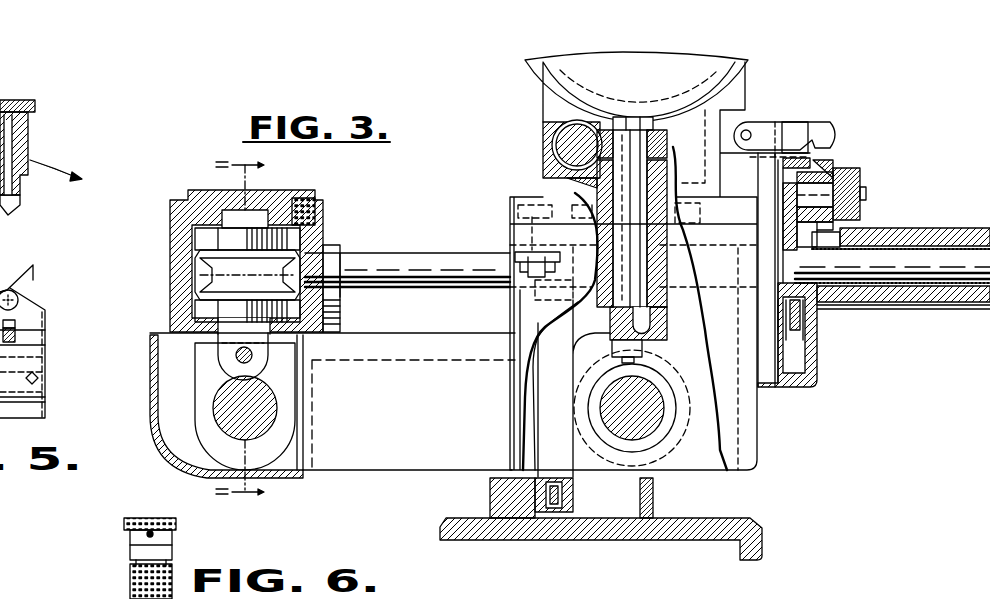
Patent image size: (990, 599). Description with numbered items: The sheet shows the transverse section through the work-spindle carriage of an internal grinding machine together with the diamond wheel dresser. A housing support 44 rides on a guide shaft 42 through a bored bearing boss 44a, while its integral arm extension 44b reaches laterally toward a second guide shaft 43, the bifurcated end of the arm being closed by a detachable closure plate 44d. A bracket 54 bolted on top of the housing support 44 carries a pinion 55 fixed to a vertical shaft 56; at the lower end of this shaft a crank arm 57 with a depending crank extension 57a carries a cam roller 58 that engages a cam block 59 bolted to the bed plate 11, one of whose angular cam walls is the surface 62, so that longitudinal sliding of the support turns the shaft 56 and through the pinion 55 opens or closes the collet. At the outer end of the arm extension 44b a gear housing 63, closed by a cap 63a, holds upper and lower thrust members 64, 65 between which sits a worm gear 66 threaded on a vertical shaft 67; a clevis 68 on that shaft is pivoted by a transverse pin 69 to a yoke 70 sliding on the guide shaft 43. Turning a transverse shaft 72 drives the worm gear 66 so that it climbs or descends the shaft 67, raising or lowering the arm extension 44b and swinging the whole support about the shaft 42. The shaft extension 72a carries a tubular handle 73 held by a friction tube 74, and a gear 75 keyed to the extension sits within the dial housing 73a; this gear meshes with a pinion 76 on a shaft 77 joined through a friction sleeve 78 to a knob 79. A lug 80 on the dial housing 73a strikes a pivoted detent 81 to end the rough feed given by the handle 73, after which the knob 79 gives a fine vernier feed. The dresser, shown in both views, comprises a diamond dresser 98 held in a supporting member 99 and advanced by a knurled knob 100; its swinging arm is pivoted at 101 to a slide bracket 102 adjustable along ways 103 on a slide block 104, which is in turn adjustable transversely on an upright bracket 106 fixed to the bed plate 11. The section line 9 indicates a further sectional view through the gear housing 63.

In FIG. 3, the section line 9 is at (249, 331).
In FIG. 3, the bed plate 11 is at (740, 516).
In FIG. 3, the guide shaft 42 is at (668, 442).
In FIG. 3, the guide shaft 43 is at (280, 418).
In FIG. 3, the housing support 44 is at (760, 420).
In FIG. 3, the bearing boss 44a is at (668, 392).
In FIG. 3, the arm extension 44b is at (372, 462).
In FIG. 3, the closure plate 44d is at (156, 380).
In FIG. 3, the bracket 54 is at (552, 142).
In FIG. 3, the pinion 55 is at (663, 143).
In FIG. 3, the vertical shaft 56 is at (632, 272).
In FIG. 3, the crank arm 57 is at (560, 348).
In FIG. 3, the crank extension 57a is at (545, 400).
In FIG. 3, the cam roller 58 is at (575, 500).
In FIG. 3, the cam block 59 is at (560, 162).
In FIG. 3, the cam wall 62 is at (640, 500).
In FIG. 3, the gear housing 63 is at (160, 270).
In FIG. 3, the cap 63a is at (295, 210).
In FIG. 3, the thrust member 64 is at (200, 207).
In FIG. 3, the thrust member 65 is at (200, 310).
In FIG. 3, the worm gear 66 is at (200, 276).
In FIG. 3, the vertical shaft 67 is at (222, 214).
In FIG. 3, the clevis 68 is at (262, 358).
In FIG. 3, the transverse pin 69 is at (232, 362).
In FIG. 3, the yoke 70 is at (275, 387).
In FIG. 3, the shaft 72 is at (385, 255).
In FIG. 3, the shaft extension 72a is at (888, 262).
In FIG. 3, the tubular handle 73 is at (908, 302).
In FIG. 3, the dial housing 73a is at (815, 376).
In FIG. 3, the friction tube 74 is at (860, 292).
In FIG. 3, the gear 75 is at (800, 320).
In FIG. 3, the pinion 76 is at (822, 160).
In FIG. 3, the shaft 77 is at (820, 190).
In FIG. 3, the friction sleeve 78 is at (850, 208).
In FIG. 3, the knob 79 is at (862, 176).
In FIG. 3, the lug 80 is at (800, 125).
In FIG. 3, the detent 81 is at (770, 125).
In FIG. 5, the diamond dresser 98 is at (16, 205).
In FIG. 5, the supporting member 99 is at (22, 130).
In FIG. 6, the supporting member 99 is at (135, 557).
In FIG. 5, the knurled knob 100 is at (15, 106).
In FIG. 6, the knurled knob 100 is at (122, 527).
In FIG. 5, the pivot 101 is at (22, 333).
In FIG. 5, the slide bracket 102 is at (44, 306).
In FIG. 5, the ways 103 is at (20, 342).
In FIG. 5, the slide block 104 is at (45, 358).
In FIG. 5, the bracket 106 is at (36, 414).